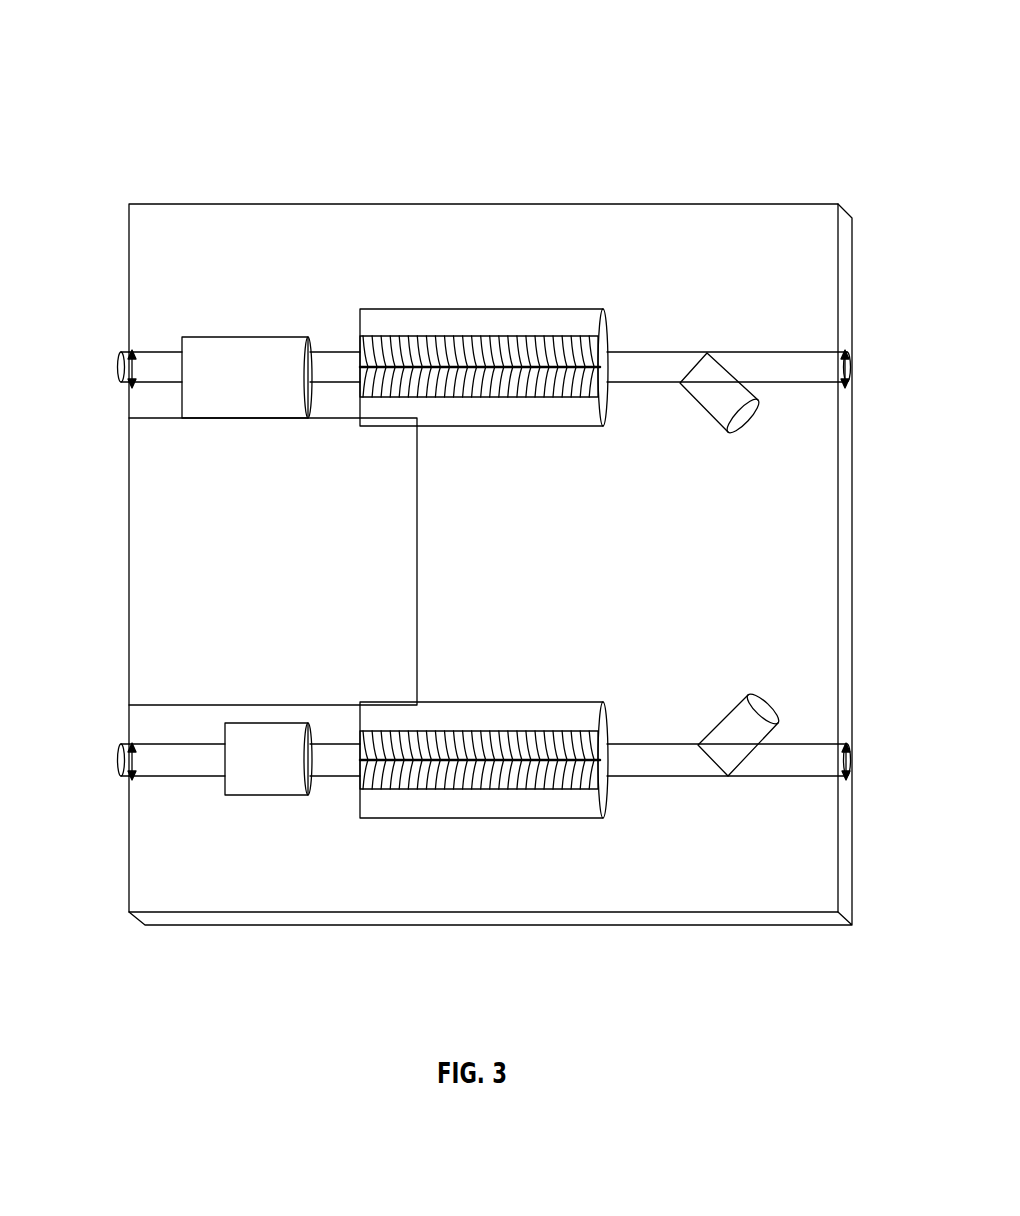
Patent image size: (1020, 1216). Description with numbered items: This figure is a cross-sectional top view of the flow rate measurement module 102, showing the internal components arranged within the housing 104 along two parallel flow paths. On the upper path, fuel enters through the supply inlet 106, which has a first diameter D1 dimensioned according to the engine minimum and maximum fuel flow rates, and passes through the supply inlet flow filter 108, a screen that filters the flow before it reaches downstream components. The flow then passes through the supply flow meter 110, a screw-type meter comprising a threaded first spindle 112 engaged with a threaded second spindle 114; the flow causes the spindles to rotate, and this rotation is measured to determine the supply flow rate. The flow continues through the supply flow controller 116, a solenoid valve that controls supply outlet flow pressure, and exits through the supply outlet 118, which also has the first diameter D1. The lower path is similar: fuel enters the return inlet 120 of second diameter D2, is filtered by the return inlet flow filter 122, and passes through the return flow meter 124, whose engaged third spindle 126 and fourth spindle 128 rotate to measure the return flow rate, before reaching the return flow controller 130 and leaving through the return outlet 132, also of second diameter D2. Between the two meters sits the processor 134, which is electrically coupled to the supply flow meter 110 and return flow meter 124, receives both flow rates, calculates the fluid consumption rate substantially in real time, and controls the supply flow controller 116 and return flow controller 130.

The flow rate measurement module 102 is at (103, 104).
The housing 104 is at (197, 209).
The supply inlet 106 is at (849, 372).
The supply inlet flow filter 108 is at (710, 375).
The supply flow meter 110 is at (532, 325).
The first spindle 112 is at (485, 342).
The second spindle 114 is at (423, 352).
The supply flow controller 116 is at (260, 347).
The supply outlet 118 is at (117, 378).
The return inlet 120 is at (850, 767).
The return inlet flow filter 122 is at (718, 745).
The return flow meter 124 is at (545, 802).
The third spindle 126 is at (477, 777).
The fourth spindle 128 is at (428, 790).
The return flow controller 130 is at (261, 787).
The return outlet 132 is at (117, 758).
The processor 134 is at (173, 507).
The first diameter D1 is at (123, 358).
The second diameter D2 is at (125, 777).